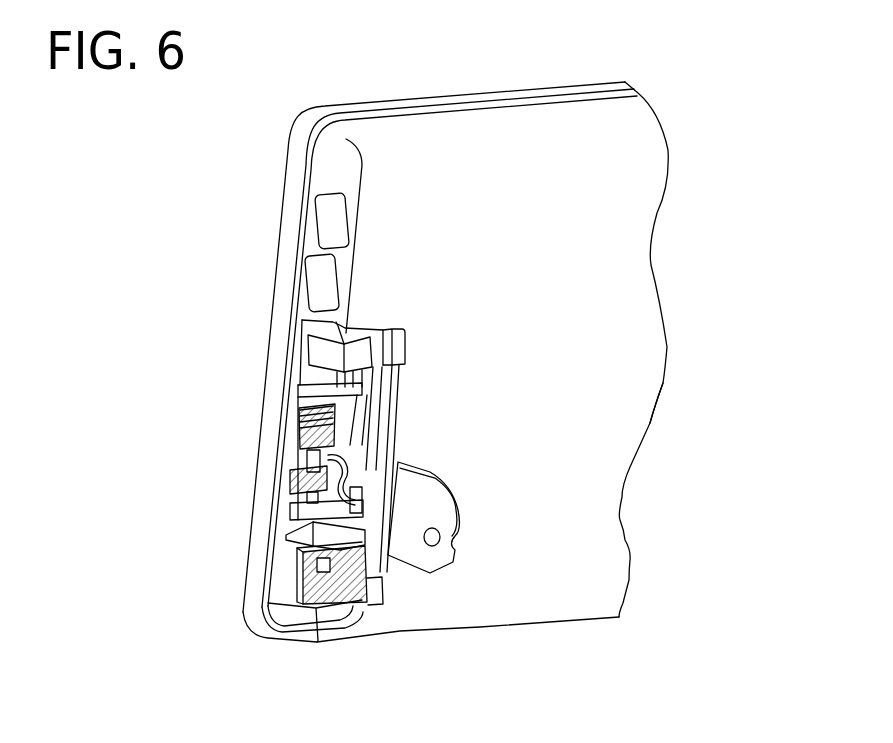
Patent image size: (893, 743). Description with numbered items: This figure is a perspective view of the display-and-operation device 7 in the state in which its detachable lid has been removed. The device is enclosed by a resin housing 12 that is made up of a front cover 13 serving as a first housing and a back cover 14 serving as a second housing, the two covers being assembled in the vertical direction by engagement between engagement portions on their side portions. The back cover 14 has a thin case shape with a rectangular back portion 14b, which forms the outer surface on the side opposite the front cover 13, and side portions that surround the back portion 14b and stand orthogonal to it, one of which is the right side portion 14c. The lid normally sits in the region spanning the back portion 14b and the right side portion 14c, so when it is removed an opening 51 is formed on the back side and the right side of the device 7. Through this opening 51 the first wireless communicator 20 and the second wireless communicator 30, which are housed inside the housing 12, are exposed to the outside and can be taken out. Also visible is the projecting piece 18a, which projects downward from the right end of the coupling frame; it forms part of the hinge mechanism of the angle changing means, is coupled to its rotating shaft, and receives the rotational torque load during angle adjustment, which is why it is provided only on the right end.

The display-and-operation device 7 is at (404, 78).
The housing 12 is at (196, 222).
The front cover 13 is at (281, 232).
The back cover 14 is at (379, 282).
The back portion 14b is at (604, 384).
The right side portion 14c is at (310, 314).
The first wireless communicator 20 is at (295, 442).
The second wireless communicator 30 is at (298, 566).
The opening 51 is at (362, 452).
The projecting piece 18a is at (423, 553).